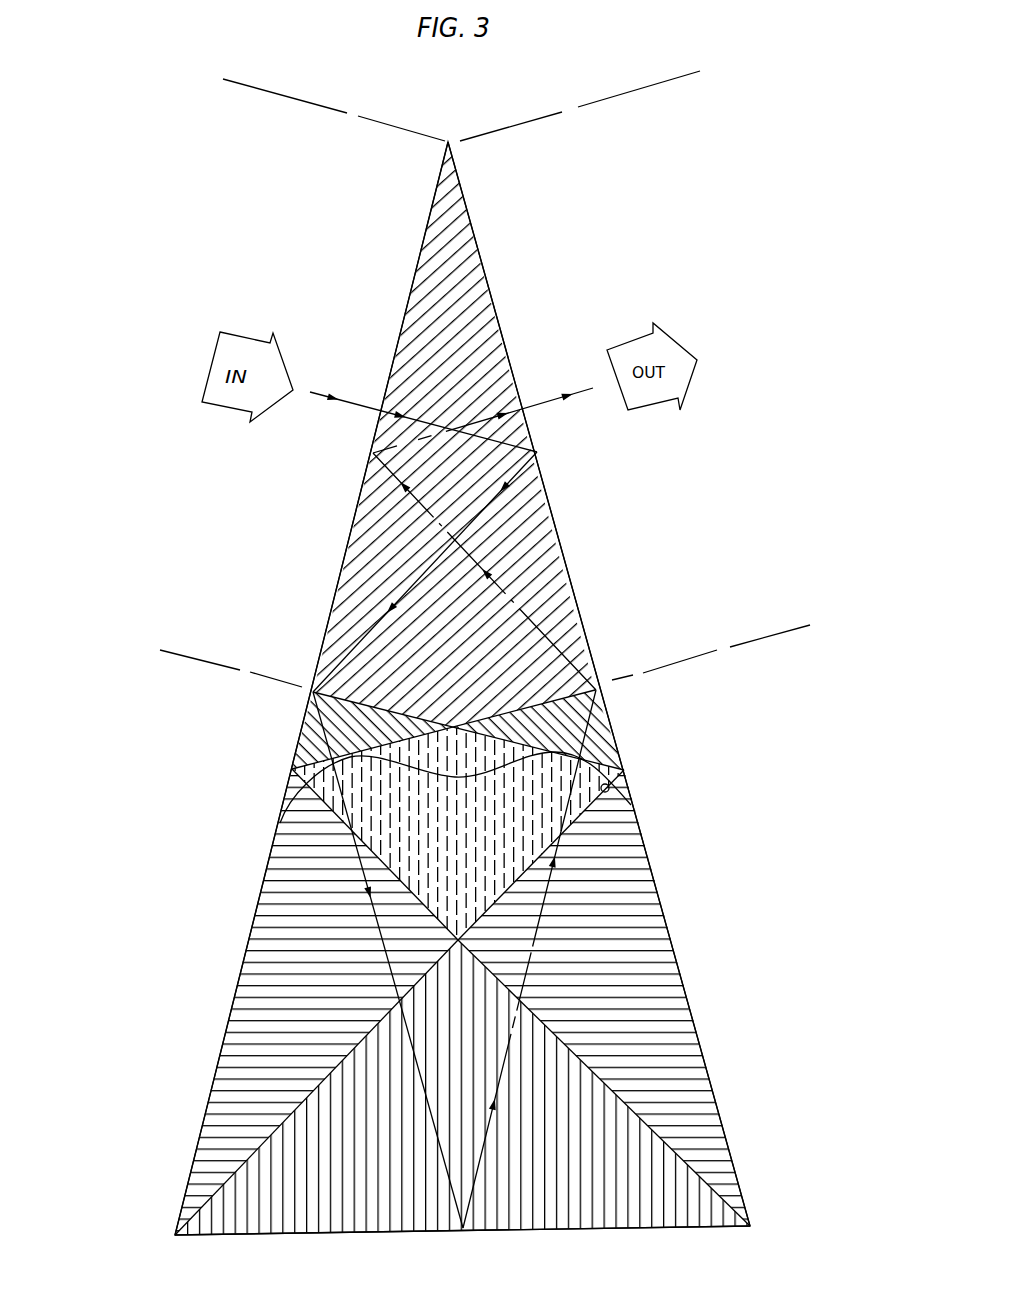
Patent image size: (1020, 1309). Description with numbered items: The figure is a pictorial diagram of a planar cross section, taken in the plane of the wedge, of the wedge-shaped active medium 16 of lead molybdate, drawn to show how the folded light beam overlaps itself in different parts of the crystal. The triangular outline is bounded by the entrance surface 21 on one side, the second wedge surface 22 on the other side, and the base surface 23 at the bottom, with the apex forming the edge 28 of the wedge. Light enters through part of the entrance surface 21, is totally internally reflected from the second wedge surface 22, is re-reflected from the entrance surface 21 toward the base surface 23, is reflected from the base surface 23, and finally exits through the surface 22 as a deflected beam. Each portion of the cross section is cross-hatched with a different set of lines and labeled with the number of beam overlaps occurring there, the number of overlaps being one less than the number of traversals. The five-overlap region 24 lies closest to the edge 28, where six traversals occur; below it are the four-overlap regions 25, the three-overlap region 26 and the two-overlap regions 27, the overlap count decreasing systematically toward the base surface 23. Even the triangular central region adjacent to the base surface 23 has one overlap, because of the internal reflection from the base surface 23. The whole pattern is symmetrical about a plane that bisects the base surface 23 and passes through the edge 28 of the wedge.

The active medium 16 is at (739, 435).
The entrance surface 21 is at (327, 630).
The second wedge surface 22 is at (587, 633).
The base surface 23 is at (592, 1228).
The five-overlap region 24 is at (543, 525).
The four-overlap region 25 is at (658, 725).
The three-overlap region 26 is at (603, 789).
The two-overlap region 27 is at (692, 891).
The edge of the wedge 28 is at (452, 141).